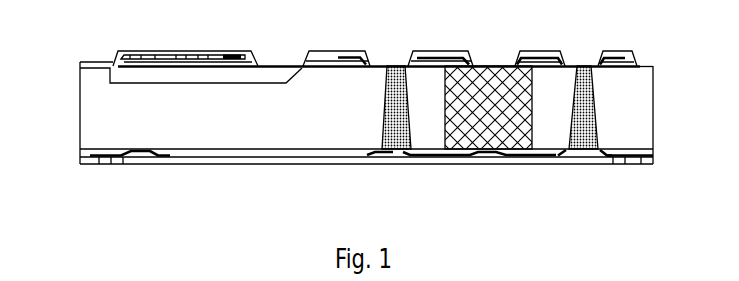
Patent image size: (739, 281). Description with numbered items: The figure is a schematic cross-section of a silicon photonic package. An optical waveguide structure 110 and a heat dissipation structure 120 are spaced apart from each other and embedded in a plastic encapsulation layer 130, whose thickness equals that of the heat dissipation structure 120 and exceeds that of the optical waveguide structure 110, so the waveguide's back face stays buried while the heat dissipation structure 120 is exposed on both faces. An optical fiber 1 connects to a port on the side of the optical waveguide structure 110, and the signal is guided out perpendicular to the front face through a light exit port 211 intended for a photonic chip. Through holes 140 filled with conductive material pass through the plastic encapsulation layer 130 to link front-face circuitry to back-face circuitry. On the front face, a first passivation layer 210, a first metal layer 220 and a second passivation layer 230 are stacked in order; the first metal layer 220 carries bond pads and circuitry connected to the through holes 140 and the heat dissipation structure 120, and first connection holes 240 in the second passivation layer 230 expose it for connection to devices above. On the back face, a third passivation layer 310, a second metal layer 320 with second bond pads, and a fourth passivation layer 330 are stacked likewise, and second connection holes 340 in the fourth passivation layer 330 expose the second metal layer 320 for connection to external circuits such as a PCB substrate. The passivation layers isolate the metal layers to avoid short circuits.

The optical fiber 1 is at (80, 62).
The optical waveguide structure 110 is at (117, 77).
The heat dissipation structure 120 is at (487, 133).
The plastic encapsulation layer 130 is at (88, 123).
The through holes 140 is at (585, 122).
The first passivation layer 210 is at (215, 62).
The light exit port 211 is at (282, 61).
The first metal layer 220 is at (347, 57).
The second passivation layer 230 is at (457, 56).
The first connection holes 240 is at (142, 58).
The third passivation layer 310 is at (240, 151).
The second metal layer 320 is at (166, 157).
The fourth passivation layer 330 is at (303, 164).
The second connection holes 340 is at (620, 164).